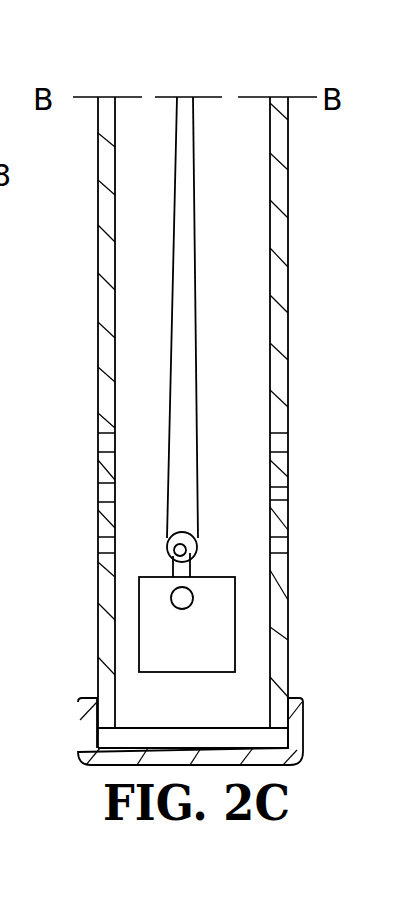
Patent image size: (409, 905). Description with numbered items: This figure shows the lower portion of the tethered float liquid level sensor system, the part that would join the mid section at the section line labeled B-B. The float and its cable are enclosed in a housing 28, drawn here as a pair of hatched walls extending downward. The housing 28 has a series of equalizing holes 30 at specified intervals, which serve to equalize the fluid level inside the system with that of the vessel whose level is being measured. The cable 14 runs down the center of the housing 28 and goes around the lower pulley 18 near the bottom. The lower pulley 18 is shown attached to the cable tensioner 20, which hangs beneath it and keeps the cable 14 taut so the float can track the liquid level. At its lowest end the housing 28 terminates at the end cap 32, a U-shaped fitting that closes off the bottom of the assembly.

The cable 14 is at (211, 317).
The lower pulley 18 is at (211, 533).
The cable tensioner 20 is at (215, 652).
The housing 28 is at (226, 422).
The holes 30 is at (98, 442).
The end cap 32 is at (305, 730).